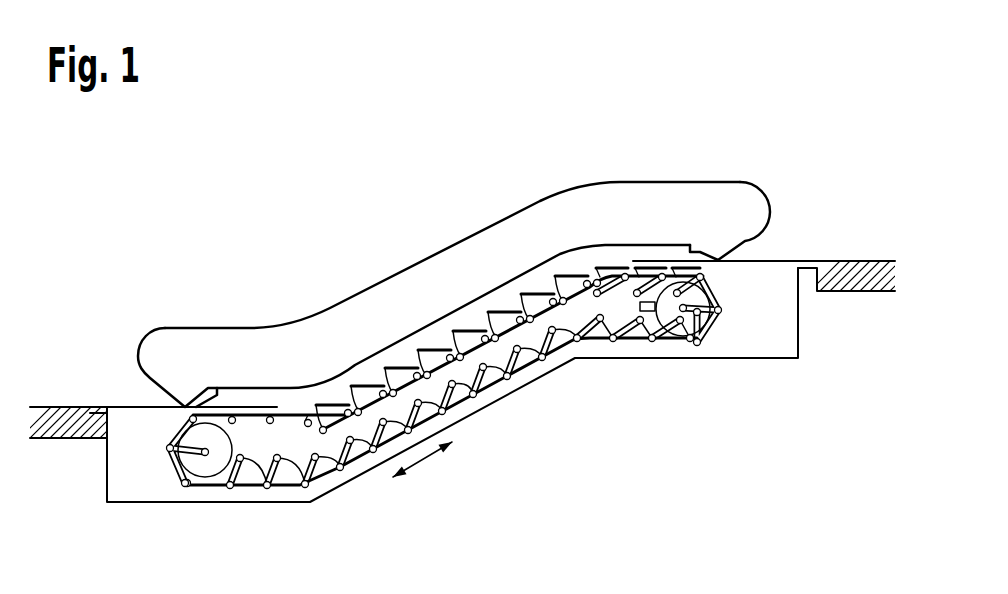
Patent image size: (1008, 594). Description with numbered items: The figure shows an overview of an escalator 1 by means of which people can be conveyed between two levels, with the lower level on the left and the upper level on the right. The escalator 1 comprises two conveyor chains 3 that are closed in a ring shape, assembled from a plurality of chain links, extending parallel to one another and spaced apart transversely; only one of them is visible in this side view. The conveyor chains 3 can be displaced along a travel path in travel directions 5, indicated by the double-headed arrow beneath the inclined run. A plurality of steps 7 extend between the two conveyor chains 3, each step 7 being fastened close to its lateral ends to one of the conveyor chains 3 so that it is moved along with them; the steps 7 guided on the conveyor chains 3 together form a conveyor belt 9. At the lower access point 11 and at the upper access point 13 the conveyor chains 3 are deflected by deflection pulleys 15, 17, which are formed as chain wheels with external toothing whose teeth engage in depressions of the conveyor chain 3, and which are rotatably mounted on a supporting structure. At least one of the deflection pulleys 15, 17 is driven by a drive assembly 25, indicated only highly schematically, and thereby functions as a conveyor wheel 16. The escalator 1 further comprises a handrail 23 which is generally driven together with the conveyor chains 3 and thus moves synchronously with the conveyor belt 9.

The escalator 1 is at (243, 195).
The conveyor chain 3 is at (300, 492).
The travel direction 5 is at (425, 460).
The step 7 is at (364, 404).
The conveyor belt 9 is at (463, 312).
The lower access point 11 is at (218, 377).
The upper access point 13 is at (689, 232).
The deflection pulley 15 is at (207, 456).
The conveyor wheel 16 is at (656, 311).
The deflection pulley 17 is at (683, 312).
The handrail 23 is at (717, 182).
The drive assembly 25 is at (652, 337).